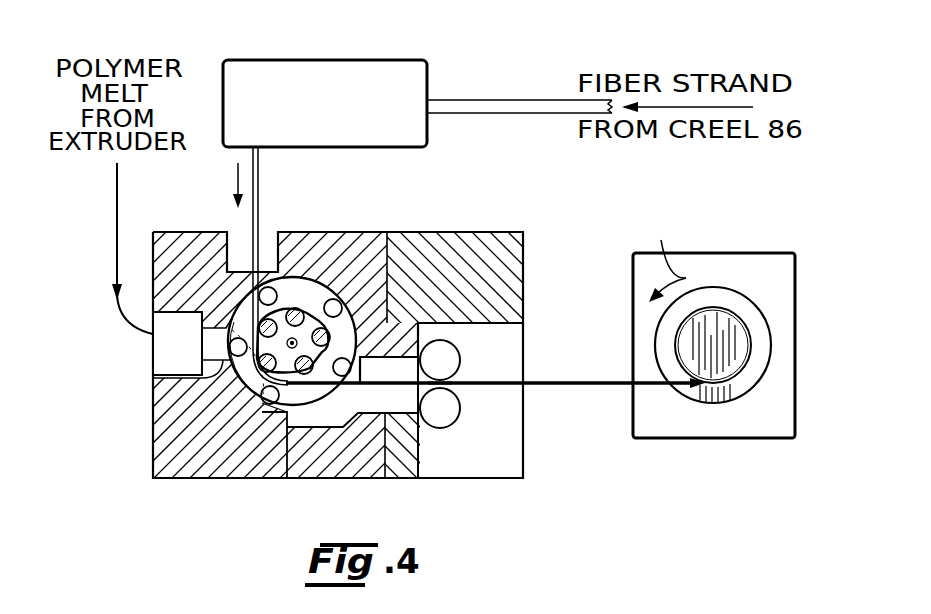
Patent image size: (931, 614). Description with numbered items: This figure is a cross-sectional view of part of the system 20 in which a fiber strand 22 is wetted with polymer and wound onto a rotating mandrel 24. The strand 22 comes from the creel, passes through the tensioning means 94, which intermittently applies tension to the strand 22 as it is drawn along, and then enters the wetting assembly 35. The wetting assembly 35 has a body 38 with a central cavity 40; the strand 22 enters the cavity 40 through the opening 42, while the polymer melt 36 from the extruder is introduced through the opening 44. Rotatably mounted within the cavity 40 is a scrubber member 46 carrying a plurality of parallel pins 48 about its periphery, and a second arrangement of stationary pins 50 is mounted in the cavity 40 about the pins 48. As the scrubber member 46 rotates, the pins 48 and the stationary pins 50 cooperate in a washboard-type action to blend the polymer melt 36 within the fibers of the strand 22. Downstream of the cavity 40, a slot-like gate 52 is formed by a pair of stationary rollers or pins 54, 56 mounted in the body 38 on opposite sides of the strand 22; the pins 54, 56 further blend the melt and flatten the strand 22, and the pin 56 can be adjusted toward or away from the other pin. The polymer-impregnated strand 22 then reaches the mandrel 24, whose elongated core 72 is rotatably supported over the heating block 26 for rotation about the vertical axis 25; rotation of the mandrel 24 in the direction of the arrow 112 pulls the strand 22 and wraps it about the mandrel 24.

The system 20 is at (133, 466).
The strand 22 is at (485, 100).
The mandrel 24 is at (772, 331).
The rotation axis 25 is at (712, 343).
The heating block 26 is at (777, 402).
The wetting assembly 35 is at (263, 488).
The polymer melt 36 is at (205, 385).
The body 38 is at (327, 280).
The central cavity 40 is at (320, 285).
The opening 42 is at (280, 268).
The opening 44 is at (173, 377).
The scrubber member 46 is at (283, 316).
The pins 48 is at (333, 330).
The stationary pins 50 is at (262, 401).
The gate 52 is at (442, 383).
The roller or pin 54 is at (452, 346).
The roller or pin 56 is at (447, 426).
The core 72 is at (730, 325).
The tensioning means 94 is at (336, 60).
The arrow 112 is at (664, 259).